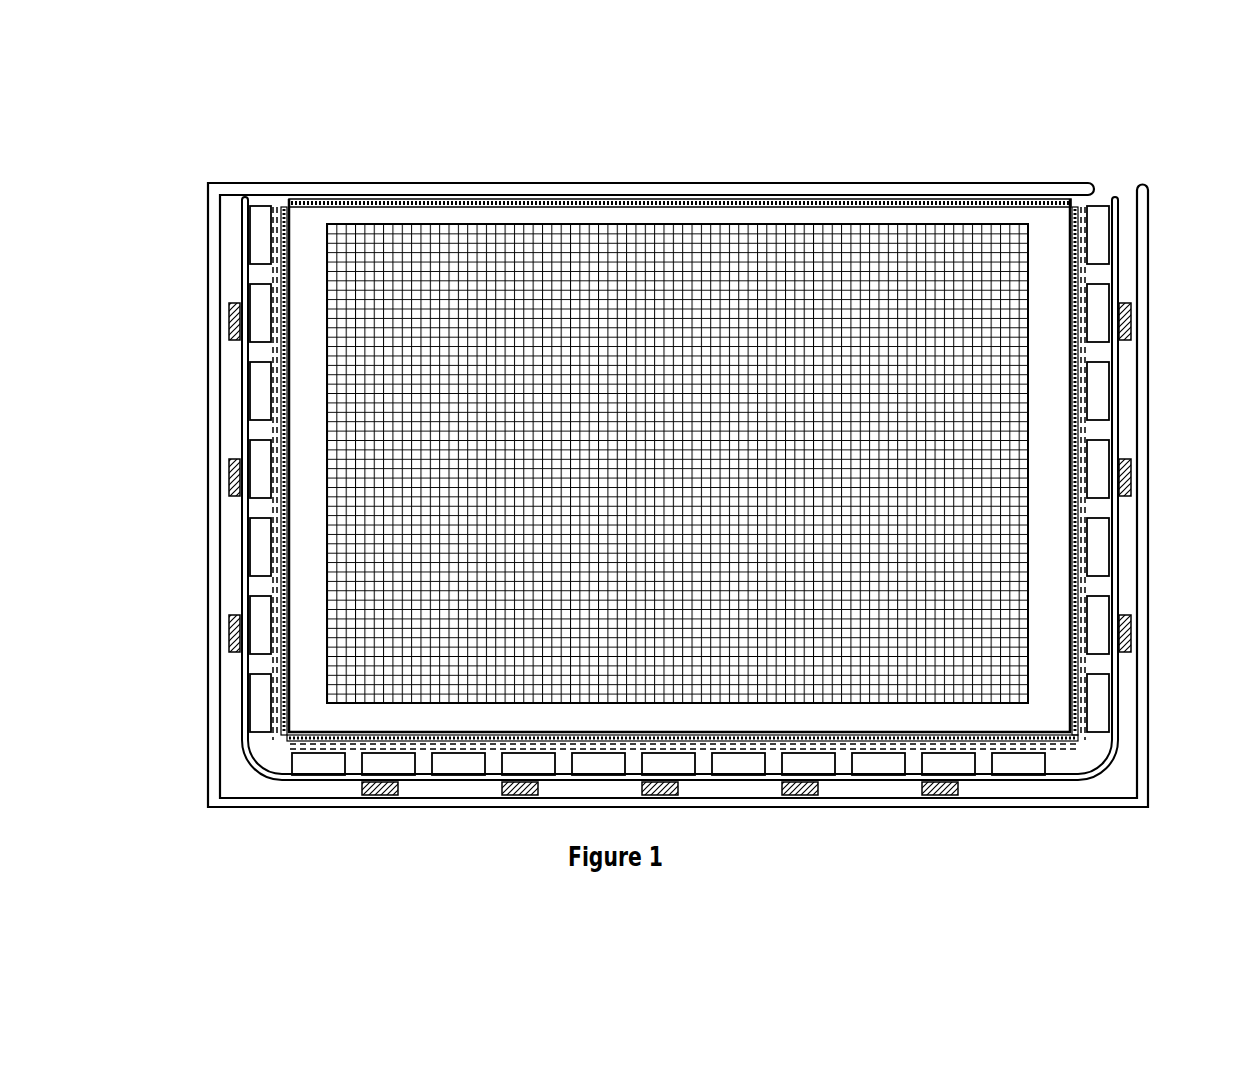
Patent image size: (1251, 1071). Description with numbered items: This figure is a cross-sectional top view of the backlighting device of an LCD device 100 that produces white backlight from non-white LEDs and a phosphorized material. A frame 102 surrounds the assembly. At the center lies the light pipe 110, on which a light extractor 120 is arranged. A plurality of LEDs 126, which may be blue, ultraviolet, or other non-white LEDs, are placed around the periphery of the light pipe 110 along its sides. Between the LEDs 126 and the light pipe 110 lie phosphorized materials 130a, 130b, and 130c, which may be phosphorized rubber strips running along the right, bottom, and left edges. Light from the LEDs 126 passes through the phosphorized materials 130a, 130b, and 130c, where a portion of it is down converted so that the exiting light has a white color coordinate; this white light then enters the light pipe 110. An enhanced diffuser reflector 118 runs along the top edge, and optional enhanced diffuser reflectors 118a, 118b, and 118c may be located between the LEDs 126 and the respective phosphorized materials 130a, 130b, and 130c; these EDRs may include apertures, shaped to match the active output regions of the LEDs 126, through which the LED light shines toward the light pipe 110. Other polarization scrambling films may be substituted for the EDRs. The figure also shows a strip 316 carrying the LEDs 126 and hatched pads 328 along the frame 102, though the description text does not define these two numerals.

The LCD device 100 is at (950, 132).
The frame 102 is at (262, 182).
The light pipe 110 is at (448, 212).
The enhanced diffuser reflector 118 is at (372, 200).
The optional enhanced diffuser reflector 118a is at (1084, 600).
The optional enhanced diffuser reflector 118b is at (1068, 750).
The optional enhanced diffuser reflector 118c is at (274, 591).
The light extractor 120 is at (553, 228).
The LEDs 126 is at (249, 539).
The phosphorized material 130a is at (1077, 207).
The phosphorized material 130b is at (287, 737).
The phosphorized material 130c is at (287, 667).
The printed circuit board strip 316 is at (240, 420).
The connector pads 328 is at (232, 313).